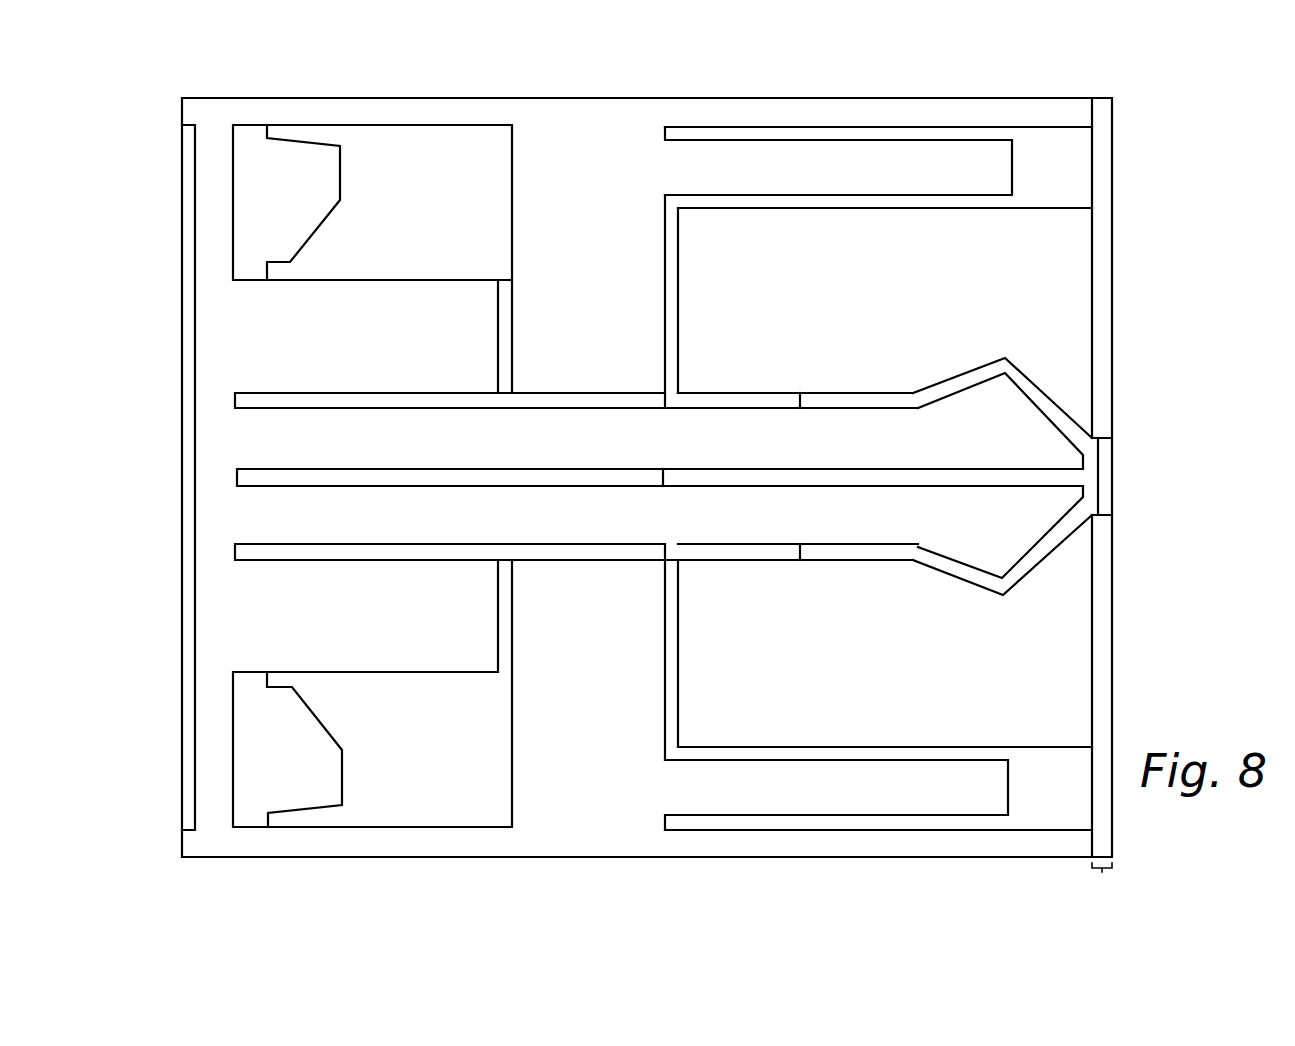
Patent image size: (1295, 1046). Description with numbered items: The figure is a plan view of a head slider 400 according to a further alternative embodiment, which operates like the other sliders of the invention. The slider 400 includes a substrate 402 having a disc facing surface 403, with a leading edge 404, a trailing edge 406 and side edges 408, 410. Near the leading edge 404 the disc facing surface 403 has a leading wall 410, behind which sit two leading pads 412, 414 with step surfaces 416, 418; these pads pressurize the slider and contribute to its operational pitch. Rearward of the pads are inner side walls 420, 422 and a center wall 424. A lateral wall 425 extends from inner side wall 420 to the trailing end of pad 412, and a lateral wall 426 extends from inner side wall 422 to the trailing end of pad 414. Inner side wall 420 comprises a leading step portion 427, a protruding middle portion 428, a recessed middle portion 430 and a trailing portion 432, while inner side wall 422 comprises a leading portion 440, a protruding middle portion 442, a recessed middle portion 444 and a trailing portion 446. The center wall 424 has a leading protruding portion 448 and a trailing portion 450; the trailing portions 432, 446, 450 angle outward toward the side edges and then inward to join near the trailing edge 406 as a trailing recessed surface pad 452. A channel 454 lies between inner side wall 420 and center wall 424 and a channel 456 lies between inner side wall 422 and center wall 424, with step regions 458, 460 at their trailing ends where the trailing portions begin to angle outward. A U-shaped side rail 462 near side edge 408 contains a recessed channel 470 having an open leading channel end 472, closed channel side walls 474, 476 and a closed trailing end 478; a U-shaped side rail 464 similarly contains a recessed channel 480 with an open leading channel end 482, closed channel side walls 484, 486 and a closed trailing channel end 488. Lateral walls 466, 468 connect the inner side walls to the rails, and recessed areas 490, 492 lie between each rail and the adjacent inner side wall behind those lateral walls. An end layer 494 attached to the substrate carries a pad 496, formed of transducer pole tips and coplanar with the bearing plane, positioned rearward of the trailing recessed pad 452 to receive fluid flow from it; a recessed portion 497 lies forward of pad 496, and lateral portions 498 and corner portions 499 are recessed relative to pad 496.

The slider 400 is at (150, 146).
The substrate 402 is at (580, 125).
The disc facing surface 403 is at (1025, 116).
The leading edge 404 is at (182, 620).
The trailing edge 406 is at (1112, 715).
The side edge 408 is at (368, 98).
The leading wall 410 is at (186, 376).
The leading pad 412 is at (430, 200).
The leading pad 414 is at (447, 768).
The step surface 416 is at (253, 190).
The step surface 418 is at (282, 768).
The inner side wall 420 is at (388, 393).
The inner side wall 422 is at (385, 560).
The center wall 424 is at (355, 470).
The lateral wall 425 is at (512, 330).
The lateral wall 426 is at (512, 628).
The leading step portion 427 is at (280, 393).
The protruding middle portion 428 is at (573, 393).
The recessed middle portion 430 is at (738, 393).
The trailing portion 432 is at (938, 386).
The leading portion 440 is at (258, 560).
The protruding middle portion 442 is at (584, 560).
The recessed middle portion 444 is at (752, 560).
The trailing portion 446 is at (937, 562).
The leading protruding portion 448 is at (505, 476).
The trailing portion 450 is at (792, 477).
The trailing recessed surface pad 452 is at (1090, 438).
The channel 454 is at (692, 452).
The channel 456 is at (692, 535).
The step region 458 is at (1016, 443).
The step region 460 is at (1016, 537).
The side rail 462 is at (877, 125).
The side rail 464 is at (896, 836).
The lateral wall 466 is at (680, 336).
The lateral wall 468 is at (680, 668).
The recessed channel 470 is at (754, 187).
The leading channel end 472 is at (660, 168).
The channel side wall 474 is at (783, 143).
The channel side wall 476 is at (855, 188).
The trailing end 478 is at (1003, 170).
The recessed channel 480 is at (774, 805).
The leading channel end 482 is at (670, 795).
The channel side wall 484 is at (800, 814).
The channel side wall 486 is at (947, 762).
The trailing channel end 488 is at (1003, 790).
The recessed area 490 is at (844, 280).
The recessed area 492 is at (869, 680).
The end layer 494 is at (1105, 884).
The pad 496 is at (1106, 490).
The recessed portion 497 is at (1098, 460).
The lateral portions 498 is at (1103, 305).
The corner portions 499 is at (1102, 113).